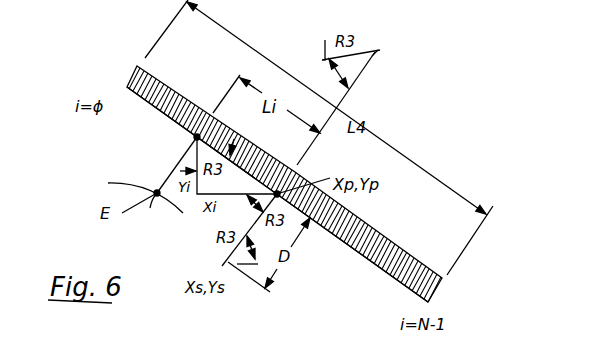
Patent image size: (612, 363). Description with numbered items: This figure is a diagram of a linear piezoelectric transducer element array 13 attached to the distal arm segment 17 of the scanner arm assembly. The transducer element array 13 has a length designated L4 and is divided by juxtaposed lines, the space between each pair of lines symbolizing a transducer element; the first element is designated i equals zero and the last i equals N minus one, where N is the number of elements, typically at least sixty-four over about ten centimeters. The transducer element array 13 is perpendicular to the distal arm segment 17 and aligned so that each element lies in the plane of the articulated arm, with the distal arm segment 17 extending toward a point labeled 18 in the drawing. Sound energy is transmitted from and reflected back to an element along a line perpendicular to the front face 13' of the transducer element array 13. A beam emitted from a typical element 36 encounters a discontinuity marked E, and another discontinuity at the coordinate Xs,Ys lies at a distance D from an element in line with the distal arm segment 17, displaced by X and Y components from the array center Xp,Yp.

The transducer element array 13 is at (309, 184).
The front face 13' is at (277, 199).
The distal arm segment 17 is at (357, 78).
The end point 18 is at (375, 52).
The typical element 36 is at (193, 139).